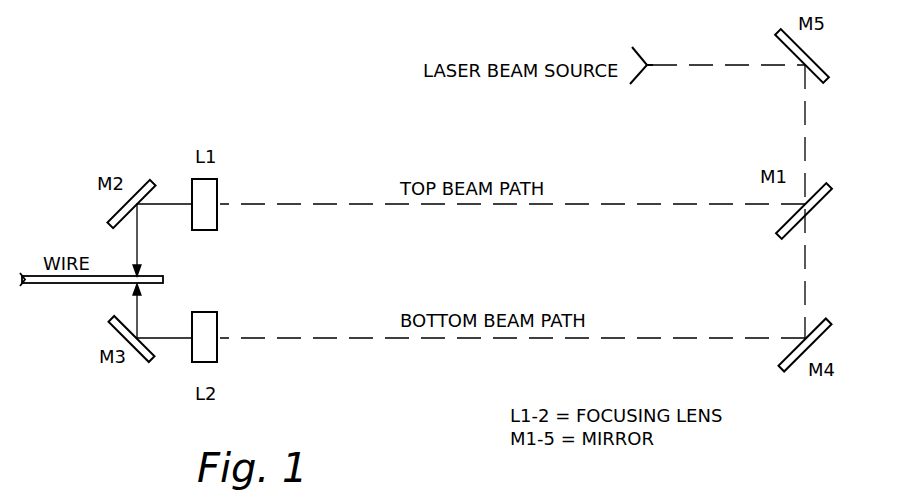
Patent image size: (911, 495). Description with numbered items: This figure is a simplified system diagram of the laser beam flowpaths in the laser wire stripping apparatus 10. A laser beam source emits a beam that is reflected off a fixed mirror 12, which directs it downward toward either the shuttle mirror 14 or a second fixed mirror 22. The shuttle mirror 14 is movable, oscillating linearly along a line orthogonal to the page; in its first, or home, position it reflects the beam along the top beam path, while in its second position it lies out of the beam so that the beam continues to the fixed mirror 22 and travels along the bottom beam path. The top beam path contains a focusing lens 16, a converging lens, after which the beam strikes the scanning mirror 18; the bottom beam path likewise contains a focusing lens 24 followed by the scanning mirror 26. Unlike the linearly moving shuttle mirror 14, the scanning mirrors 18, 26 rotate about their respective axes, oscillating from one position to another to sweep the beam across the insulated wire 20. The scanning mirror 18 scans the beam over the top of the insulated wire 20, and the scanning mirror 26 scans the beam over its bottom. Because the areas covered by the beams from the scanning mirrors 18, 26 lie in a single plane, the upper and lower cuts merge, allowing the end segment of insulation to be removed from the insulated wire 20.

The laser wire stripping apparatus 10 is at (266, 92).
The mirror 12 is at (812, 58).
The shuttle mirror 14 is at (813, 210).
The focusing lens 16 is at (217, 187).
The scanning mirror 18 is at (143, 185).
The insulated wire 20 is at (157, 277).
The mirror 22 is at (818, 338).
The focusing lens 24 is at (217, 312).
The scanning mirror 26 is at (110, 323).